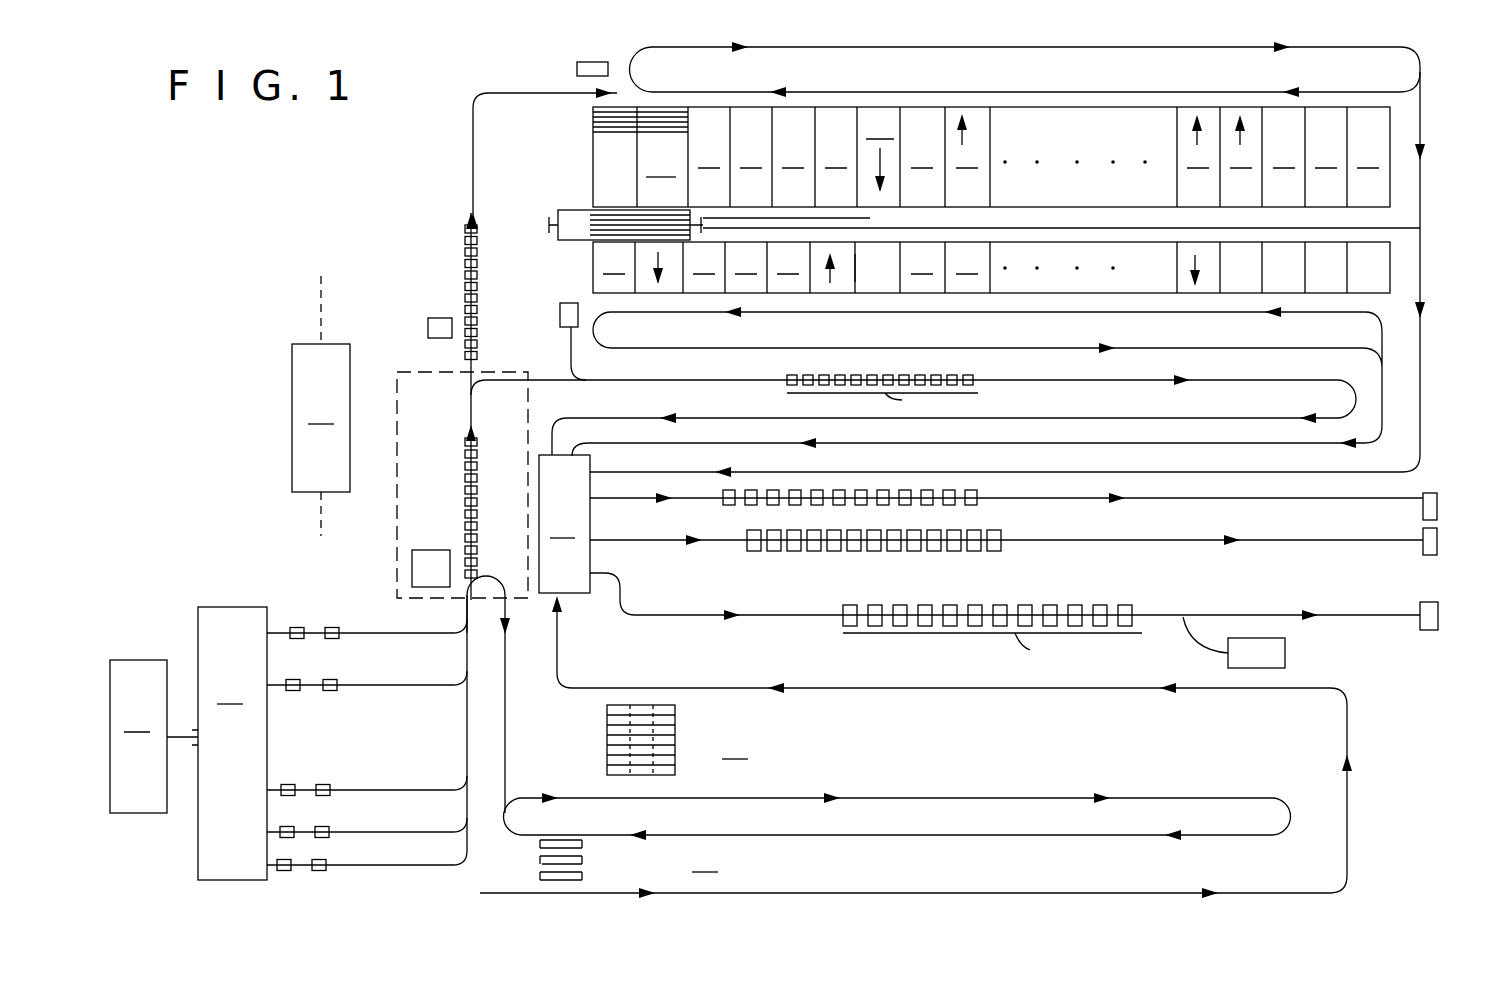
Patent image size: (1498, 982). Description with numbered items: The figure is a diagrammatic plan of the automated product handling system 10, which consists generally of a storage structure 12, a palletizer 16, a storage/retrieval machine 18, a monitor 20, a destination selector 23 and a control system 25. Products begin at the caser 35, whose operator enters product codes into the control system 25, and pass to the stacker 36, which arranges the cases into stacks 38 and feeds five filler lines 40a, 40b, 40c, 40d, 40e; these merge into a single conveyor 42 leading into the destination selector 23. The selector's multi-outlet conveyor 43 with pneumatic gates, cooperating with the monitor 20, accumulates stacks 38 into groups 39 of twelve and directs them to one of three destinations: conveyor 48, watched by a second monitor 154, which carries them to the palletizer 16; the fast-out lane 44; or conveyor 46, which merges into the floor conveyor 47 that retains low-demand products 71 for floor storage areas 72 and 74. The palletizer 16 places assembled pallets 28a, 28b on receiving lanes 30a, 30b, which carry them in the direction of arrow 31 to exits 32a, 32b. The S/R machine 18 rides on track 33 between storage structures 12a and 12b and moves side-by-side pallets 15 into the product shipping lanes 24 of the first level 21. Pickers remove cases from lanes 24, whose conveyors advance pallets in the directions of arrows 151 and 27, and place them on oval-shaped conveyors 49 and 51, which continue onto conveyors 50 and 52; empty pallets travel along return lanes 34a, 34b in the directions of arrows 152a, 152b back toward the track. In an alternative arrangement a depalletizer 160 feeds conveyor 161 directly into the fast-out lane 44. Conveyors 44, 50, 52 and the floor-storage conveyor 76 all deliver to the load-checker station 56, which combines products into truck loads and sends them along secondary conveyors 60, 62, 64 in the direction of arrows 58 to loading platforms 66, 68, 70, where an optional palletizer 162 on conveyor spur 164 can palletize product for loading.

The automated product handling system 10 is at (350, 230).
The storage structure 12 is at (948, 199).
The storage structure 12a is at (595, 149).
The storage structure 12b is at (593, 260).
The pallets 15 is at (968, 127).
The palletizer 16 is at (577, 68).
The storage/retrieval machine 18 is at (547, 230).
The monitor 20 is at (430, 550).
The first level 21 is at (952, 179).
The destination selector 23 is at (395, 500).
The product shipping lanes 24 is at (991, 209).
The control system 25 is at (321, 406).
The arrow 27 is at (625, 290).
The assembled pallet 28a is at (593, 118).
The assembled pallet 28b is at (668, 107).
The pallet receiving lane 30a is at (600, 180).
The pallet receiving lane 30b is at (661, 165).
The arrow 31 is at (614, 175).
The exit 32a is at (600, 207).
The exit 32b is at (668, 212).
The track 33 is at (1058, 228).
The empty pallet return lane 34a is at (880, 154).
The empty pallet return lane 34b is at (874, 287).
The caser 35 is at (154, 736).
The stacker 36 is at (232, 743).
The stacks 38 is at (465, 252).
The groups 39 is at (482, 500).
The filler line 40a is at (409, 864).
The filler line 40b is at (409, 831).
The filler line 40c is at (425, 789).
The filler line 40d is at (409, 684).
The filler line 40e is at (391, 632).
The conveyor 42 is at (458, 603).
The multi-outlet conveyor 43 is at (465, 403).
The fast-out lane 44 is at (622, 383).
The conveyor 46 is at (508, 686).
The floor conveyor 47 is at (1197, 798).
The conveyor 48 is at (470, 152).
The oval-shaped conveyor 49 is at (632, 55).
The conveyor 50 is at (1423, 265).
The oval-shaped conveyor 51 is at (605, 322).
The conveyor 52 is at (1380, 362).
The load-checker station 56 is at (564, 524).
The arrows 58 is at (1232, 538).
The secondary conveyor 60 is at (1062, 497).
The secondary conveyor 62 is at (1062, 539).
The secondary conveyor 64 is at (1162, 615).
The loading platform 66 is at (1440, 506).
The loading platform 68 is at (1440, 552).
The loading platform 70 is at (1438, 606).
The low-demand products 71 is at (607, 740).
The floor storage area 72 is at (735, 746).
The floor storage area 74 is at (705, 859).
The conveyor 76 is at (688, 688).
The arrow 151 is at (794, 118).
The arrow 152a is at (885, 187).
The arrow 152b is at (875, 255).
The monitor 154 is at (436, 318).
The depalletizer 160 is at (560, 313).
The conveyor 161 is at (570, 350).
The palletizer 162 is at (1285, 653).
The conveyor spur 164 is at (1197, 645).